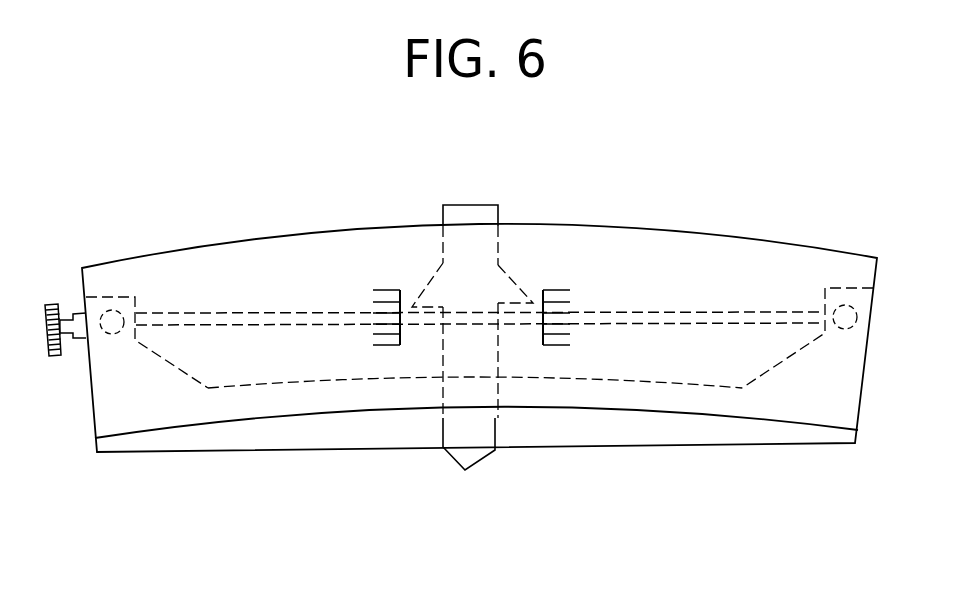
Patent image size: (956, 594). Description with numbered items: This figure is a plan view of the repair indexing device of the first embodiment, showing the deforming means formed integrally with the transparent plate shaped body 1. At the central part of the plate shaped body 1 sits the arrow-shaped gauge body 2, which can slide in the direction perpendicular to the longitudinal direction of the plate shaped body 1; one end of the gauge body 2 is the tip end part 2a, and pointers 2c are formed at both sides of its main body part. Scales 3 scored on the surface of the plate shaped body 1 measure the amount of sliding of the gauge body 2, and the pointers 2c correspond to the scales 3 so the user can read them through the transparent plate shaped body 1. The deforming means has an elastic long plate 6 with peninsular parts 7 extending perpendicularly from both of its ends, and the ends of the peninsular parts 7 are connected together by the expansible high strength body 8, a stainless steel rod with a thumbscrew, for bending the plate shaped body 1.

The plate shaped body 1 is at (648, 227).
The gauge body 2 is at (476, 205).
The tip end part 2a is at (465, 470).
The pointers 2c is at (427, 287).
The scales 3 is at (382, 346).
The long plate 6 is at (107, 398).
The peninsular parts 7 is at (110, 300).
The high strength body 8 is at (222, 312).